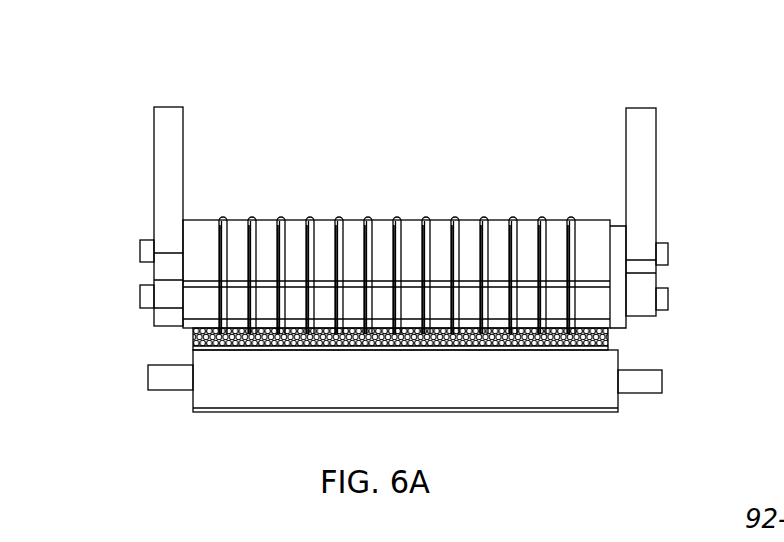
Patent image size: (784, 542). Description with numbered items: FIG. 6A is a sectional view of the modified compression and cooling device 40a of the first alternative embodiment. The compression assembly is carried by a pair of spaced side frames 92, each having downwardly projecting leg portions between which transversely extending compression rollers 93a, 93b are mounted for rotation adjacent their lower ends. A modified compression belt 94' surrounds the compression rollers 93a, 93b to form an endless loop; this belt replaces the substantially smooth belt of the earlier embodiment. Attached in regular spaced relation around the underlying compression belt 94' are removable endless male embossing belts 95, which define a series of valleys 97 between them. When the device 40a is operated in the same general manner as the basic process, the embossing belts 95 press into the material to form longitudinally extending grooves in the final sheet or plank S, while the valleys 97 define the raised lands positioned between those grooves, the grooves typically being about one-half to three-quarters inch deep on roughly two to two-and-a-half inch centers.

The modified compression and cooling device 40a is at (568, 118).
The side frames 92 is at (160, 128).
The compression roller 93a is at (617, 243).
The compression roller 93b is at (618, 305).
The modified compression belt 94' is at (396, 240).
The embossing belts 95 is at (312, 213).
The valleys 97 is at (438, 218).
The final sheet or plank S is at (193, 339).